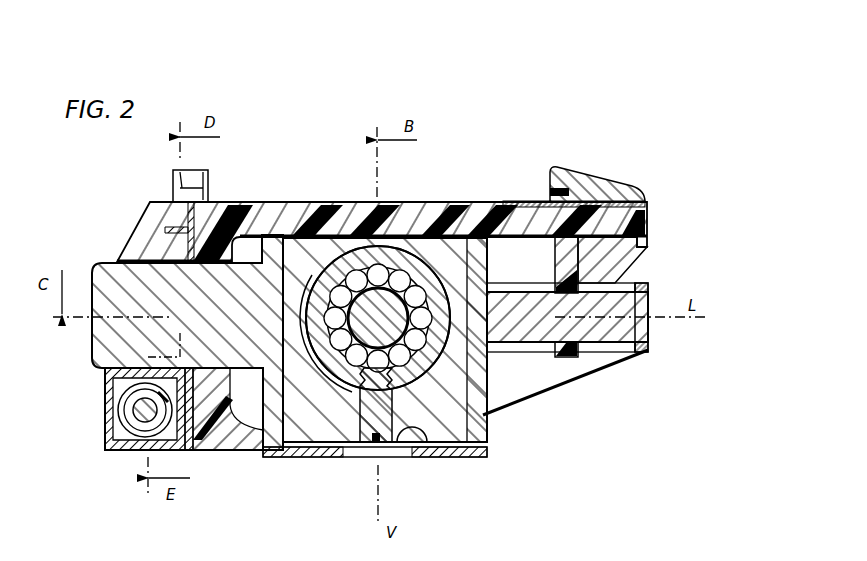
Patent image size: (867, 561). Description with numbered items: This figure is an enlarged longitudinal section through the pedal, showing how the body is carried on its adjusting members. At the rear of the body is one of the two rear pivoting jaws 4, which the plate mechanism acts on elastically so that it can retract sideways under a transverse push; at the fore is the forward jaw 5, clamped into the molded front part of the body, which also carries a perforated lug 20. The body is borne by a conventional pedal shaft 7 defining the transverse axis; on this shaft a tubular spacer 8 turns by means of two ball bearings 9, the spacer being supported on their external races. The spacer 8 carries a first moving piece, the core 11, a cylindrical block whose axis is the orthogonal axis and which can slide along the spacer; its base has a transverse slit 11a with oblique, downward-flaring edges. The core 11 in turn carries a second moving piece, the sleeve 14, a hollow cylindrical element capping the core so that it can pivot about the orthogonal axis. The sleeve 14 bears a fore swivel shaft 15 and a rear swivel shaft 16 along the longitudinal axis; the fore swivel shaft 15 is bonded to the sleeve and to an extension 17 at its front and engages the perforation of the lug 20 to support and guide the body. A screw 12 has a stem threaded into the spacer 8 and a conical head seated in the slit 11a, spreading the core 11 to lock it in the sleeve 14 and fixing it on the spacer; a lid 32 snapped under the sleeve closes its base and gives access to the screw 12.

The rear pivoting jaw 4 is at (208, 182).
The forward jaw 5 is at (600, 192).
The pedal shaft 7 is at (400, 316).
The tubular spacer 8 is at (352, 265).
The ball bearing 9 is at (377, 268).
The core 11 is at (483, 390).
The transverse slit 11a is at (415, 446).
The screw 12 is at (380, 446).
The sleeve 14 is at (277, 432).
The fore swivel shaft 15 is at (645, 327).
The rear swivel shaft 16 is at (100, 348).
The extension 17 is at (645, 356).
The perforated lug 20 is at (568, 268).
The lid 32 is at (337, 458).